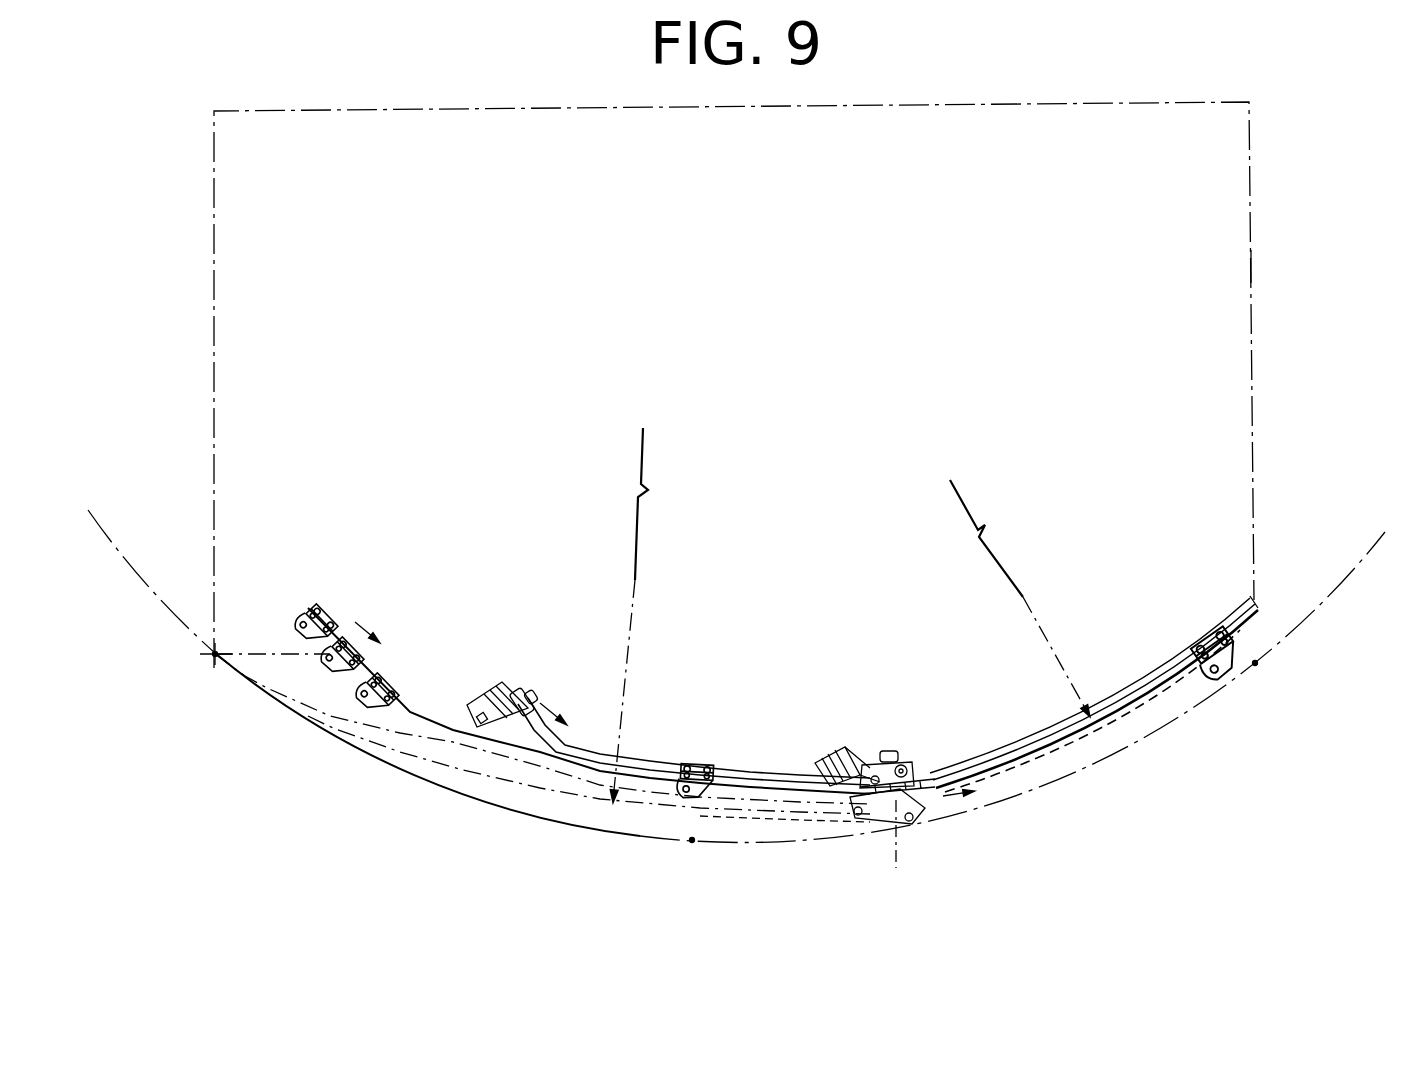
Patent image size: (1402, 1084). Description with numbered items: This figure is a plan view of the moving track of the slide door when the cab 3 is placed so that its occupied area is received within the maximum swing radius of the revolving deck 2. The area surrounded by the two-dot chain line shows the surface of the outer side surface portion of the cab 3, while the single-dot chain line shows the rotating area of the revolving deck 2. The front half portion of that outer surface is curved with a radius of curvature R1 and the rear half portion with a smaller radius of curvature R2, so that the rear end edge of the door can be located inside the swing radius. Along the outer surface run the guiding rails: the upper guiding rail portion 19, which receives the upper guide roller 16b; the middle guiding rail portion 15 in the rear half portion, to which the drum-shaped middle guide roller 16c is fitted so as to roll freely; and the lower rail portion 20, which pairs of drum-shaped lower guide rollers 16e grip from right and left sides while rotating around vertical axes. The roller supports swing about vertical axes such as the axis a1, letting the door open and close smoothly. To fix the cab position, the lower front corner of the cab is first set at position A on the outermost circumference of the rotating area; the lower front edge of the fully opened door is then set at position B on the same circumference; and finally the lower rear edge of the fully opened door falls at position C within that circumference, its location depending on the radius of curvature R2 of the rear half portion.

The revolving deck 2 is at (1331, 488).
The cab 3 is at (1252, 270).
The middle guiding rail portion 15 is at (1152, 676).
The guide roller 16b is at (524, 690).
The middle guide roller 16c is at (912, 790).
The lower guide roller 16e is at (325, 604).
The upper guiding rail portion 19 is at (752, 772).
The rail portion 20 is at (417, 708).
The axis a1 is at (897, 851).
The radius of curvature of the front half portion R1 is at (648, 615).
The radius of curvature of the rear half portion R2 is at (1020, 598).
The position of the lower end of the front end edge of the cab A is at (264, 667).
The position of the lower end of the front end edge of the door B is at (687, 861).
The position of the lower end of the rear end edge of the slide door C is at (1257, 681).